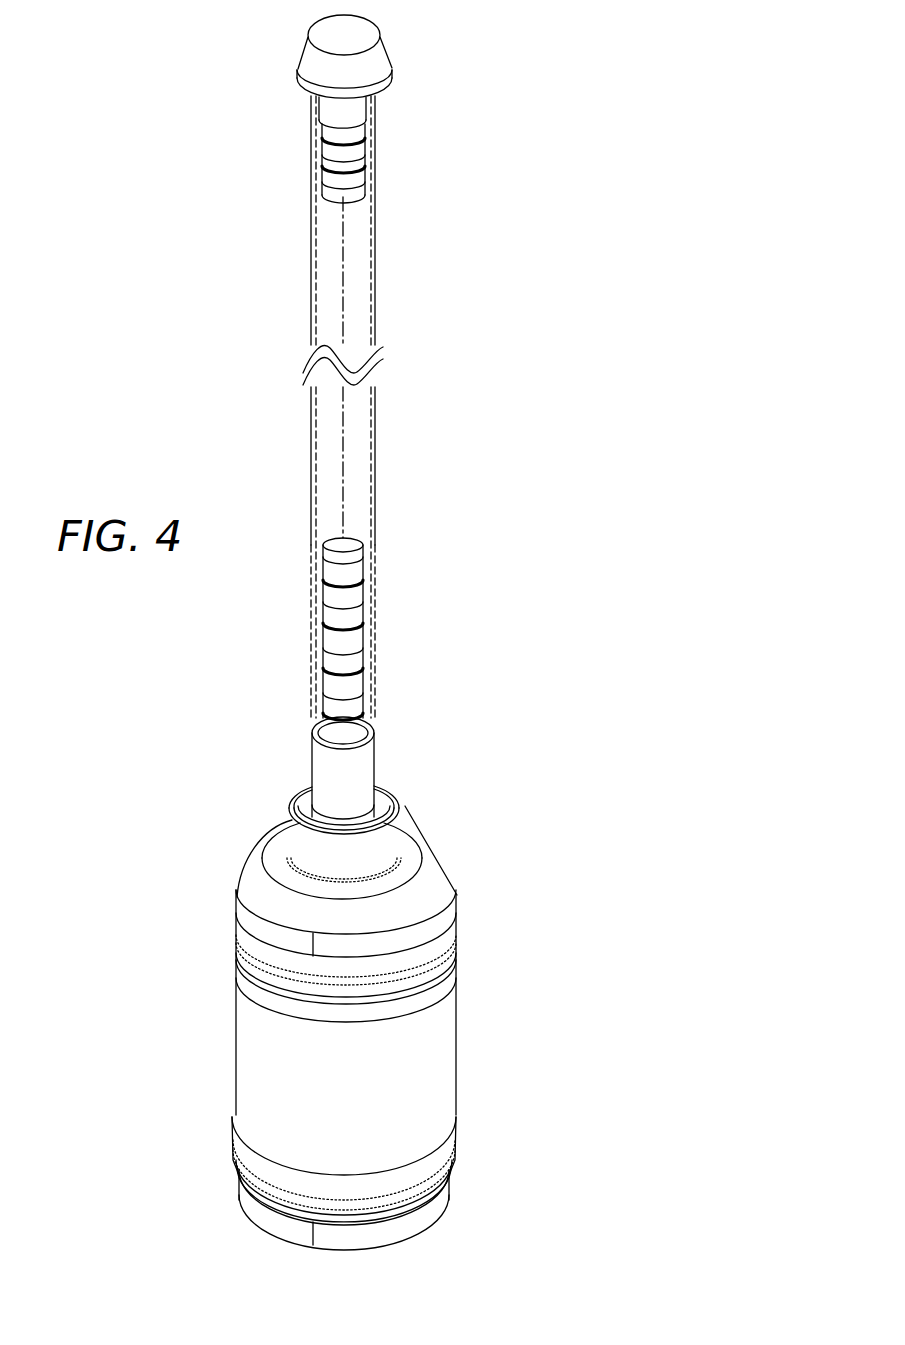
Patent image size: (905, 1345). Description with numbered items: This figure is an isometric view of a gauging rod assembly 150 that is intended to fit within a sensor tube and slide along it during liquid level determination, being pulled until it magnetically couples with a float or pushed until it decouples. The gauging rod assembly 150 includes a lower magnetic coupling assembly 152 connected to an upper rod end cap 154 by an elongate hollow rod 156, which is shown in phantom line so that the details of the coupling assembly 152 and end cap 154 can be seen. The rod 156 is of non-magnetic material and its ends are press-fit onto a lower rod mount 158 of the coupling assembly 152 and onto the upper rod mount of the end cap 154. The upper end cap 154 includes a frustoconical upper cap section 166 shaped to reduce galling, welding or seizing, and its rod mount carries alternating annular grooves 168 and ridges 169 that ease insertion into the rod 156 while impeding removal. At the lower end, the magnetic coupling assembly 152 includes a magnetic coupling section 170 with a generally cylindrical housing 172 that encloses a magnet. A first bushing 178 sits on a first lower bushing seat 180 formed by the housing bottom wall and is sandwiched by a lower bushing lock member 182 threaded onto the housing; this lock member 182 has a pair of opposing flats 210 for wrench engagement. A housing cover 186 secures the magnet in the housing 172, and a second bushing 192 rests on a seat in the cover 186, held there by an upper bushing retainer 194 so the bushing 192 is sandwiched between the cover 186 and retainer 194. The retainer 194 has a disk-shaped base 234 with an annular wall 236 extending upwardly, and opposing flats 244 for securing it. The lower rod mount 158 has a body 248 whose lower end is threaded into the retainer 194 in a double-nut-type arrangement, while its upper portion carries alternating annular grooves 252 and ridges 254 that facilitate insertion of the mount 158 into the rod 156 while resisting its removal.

The gauging rod assembly 150 is at (182, 354).
The magnetic coupling assembly 152 is at (538, 964).
The upper rod end cap 154 is at (410, 50).
The rod 156 is at (375, 428).
The lower rod mount 158 is at (368, 585).
The upper cap section 166 is at (300, 56).
The annular grooves 168 is at (336, 155).
The ridges 169 is at (358, 174).
The magnetic coupling section 170 is at (222, 1068).
The housing 172 is at (252, 1027).
The first bushing 178 is at (448, 1161).
The first lower bushing seat 180 is at (460, 1063).
The lower bushing lock member 182 is at (415, 1223).
The housing cover 186 is at (256, 990).
The second bushing 192 is at (260, 963).
The upper bushing retainer 194 is at (435, 867).
The opposing flats 210 is at (265, 1211).
The disk-shaped base 234 is at (265, 813).
The annular wall 236 is at (297, 837).
The opposing flats 244 is at (262, 906).
The body 248 is at (370, 757).
The annular grooves 252 is at (358, 613).
The ridges 254 is at (325, 590).